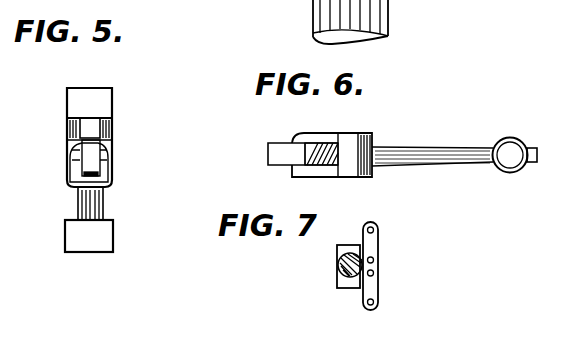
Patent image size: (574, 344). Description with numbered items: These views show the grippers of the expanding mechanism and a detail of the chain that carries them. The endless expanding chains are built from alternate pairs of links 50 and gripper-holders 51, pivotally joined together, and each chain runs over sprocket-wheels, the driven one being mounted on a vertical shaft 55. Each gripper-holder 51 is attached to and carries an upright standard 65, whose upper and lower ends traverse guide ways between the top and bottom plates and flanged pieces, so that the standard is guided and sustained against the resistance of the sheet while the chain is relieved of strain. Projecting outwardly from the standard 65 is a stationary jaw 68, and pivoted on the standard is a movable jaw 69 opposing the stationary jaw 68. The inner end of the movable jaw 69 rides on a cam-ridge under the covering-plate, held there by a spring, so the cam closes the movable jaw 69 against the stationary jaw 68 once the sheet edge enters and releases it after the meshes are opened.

In FIG. 7, the links 50 is at (379, 242).
In FIG. 7, the gripper-holder 51 is at (365, 280).
In FIG. 6, the shaft 55 is at (326, 7).
In FIG. 5, the upright standard 65 is at (100, 190).
In FIG. 5, the stationary jaw 68 is at (90, 127).
In FIG. 6, the stationary jaw 68 is at (268, 158).
In FIG. 5, the movable jaw 69 is at (90, 157).
In FIG. 6, the movable jaw 69 is at (300, 170).